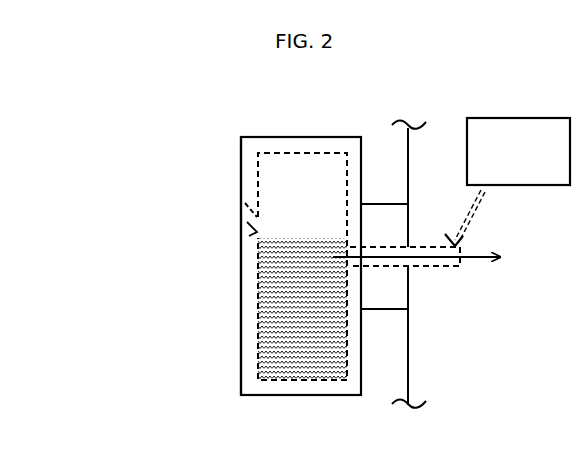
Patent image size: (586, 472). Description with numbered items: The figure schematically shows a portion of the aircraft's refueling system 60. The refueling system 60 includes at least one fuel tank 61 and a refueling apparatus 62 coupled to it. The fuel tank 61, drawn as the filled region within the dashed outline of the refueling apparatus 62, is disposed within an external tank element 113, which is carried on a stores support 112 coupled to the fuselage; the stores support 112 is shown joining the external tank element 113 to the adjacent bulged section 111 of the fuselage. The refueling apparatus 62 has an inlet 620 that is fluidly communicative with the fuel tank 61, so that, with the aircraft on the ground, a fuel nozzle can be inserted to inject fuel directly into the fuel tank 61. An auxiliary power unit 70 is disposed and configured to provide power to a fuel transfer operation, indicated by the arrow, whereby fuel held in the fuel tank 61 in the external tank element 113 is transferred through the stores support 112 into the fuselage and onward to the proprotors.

The refueling system 60 is at (190, 193).
The refueling apparatus 62 is at (240, 192).
The inlet 620 is at (256, 232).
The fuel tank 61 is at (258, 357).
The external tank element 113 is at (241, 309).
The bulged section 111 is at (410, 342).
The stores support 112 is at (380, 305).
The auxiliary power unit 70 is at (507, 182).